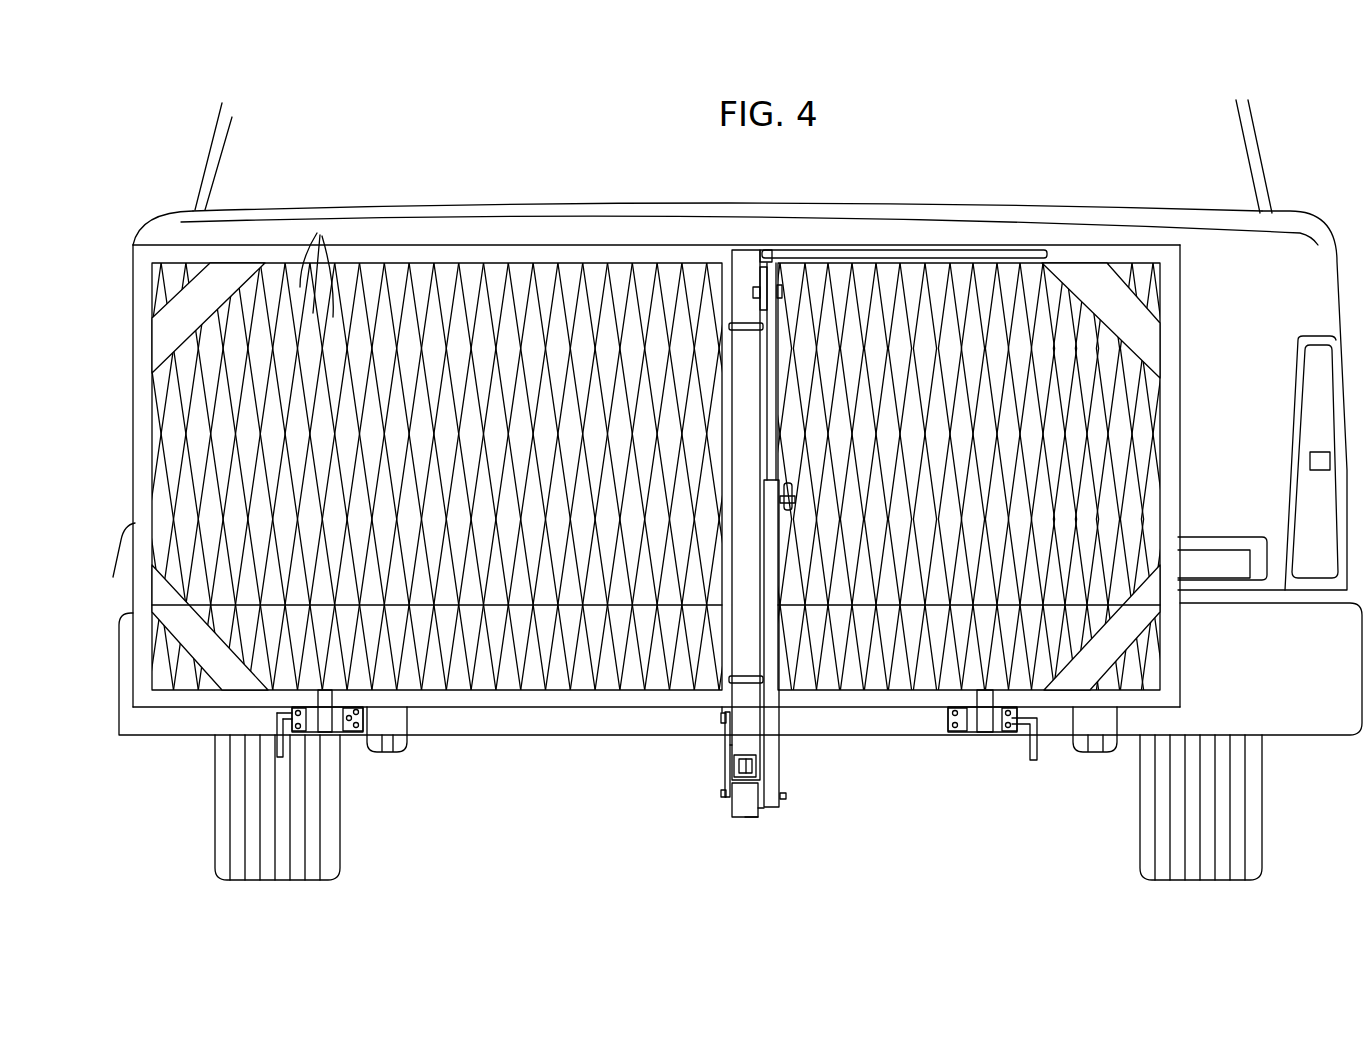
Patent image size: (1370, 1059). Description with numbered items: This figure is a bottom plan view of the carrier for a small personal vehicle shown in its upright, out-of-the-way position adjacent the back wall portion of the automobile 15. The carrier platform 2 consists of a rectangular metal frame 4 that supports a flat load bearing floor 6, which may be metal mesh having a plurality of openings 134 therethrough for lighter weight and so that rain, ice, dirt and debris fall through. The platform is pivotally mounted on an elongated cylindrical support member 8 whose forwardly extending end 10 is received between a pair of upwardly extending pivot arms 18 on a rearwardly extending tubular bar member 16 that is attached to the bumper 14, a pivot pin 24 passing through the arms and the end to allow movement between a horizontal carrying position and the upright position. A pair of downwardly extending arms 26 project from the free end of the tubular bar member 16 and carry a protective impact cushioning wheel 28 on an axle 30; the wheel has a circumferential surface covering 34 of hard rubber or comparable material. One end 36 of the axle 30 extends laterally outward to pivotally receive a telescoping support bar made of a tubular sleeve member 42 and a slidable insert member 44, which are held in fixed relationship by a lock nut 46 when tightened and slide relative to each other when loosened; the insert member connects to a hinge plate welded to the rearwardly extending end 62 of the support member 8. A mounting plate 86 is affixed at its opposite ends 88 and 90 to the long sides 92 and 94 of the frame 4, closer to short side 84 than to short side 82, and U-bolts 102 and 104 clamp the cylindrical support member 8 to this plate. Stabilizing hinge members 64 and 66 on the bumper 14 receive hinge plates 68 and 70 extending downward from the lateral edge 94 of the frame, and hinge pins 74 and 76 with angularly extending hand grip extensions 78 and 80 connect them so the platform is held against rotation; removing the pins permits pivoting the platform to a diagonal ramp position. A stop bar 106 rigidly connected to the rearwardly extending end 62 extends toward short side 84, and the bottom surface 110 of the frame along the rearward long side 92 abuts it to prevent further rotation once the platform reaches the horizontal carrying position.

The carrier platform 2 is at (503, 245).
The rectangular metal frame 4 is at (113, 557).
The flat load bearing floor 6 is at (190, 388).
The elongated cylindrical support member 8 is at (742, 510).
The forwardly extending end 10 is at (733, 745).
The bumper 14 is at (870, 720).
The automobile 15 is at (185, 238).
The tubular bar member 16 is at (748, 765).
The pivot arms 18 is at (730, 765).
The pivot pin 24 is at (727, 730).
The downwardly extending arms 26 is at (762, 810).
The protective impact cushioning wheel 28 is at (745, 818).
The axle 30 is at (722, 795).
The circumferential surface covering 34 is at (750, 815).
The one end of the axle 36 is at (786, 796).
The tubular sleeve member 42 is at (778, 610).
The slidable insert member 44 is at (780, 350).
The lock nut 46 is at (790, 497).
The rearwardly extending end 62 is at (752, 262).
The stabilizing hinge member 64 is at (345, 727).
The stabilizing hinge member 66 is at (1000, 727).
The hinge plate 68 is at (325, 728).
The hinge plate 70 is at (985, 727).
The hinge pin 74 is at (280, 715).
The hinge pin 76 is at (962, 728).
The hand grip extension 78 is at (275, 748).
The hand grip extension 80 is at (1040, 752).
The short side 82 is at (130, 450).
The short side 84 is at (1182, 413).
The mounting plate 86 is at (723, 285).
The end of mounting plate 88 is at (727, 300).
The end of mounting plate 90 is at (720, 710).
The rearward long side 92 is at (378, 250).
The long side 94 is at (600, 710).
The U-bolt 102 is at (730, 327).
The U-bolt 104 is at (730, 680).
The stop bar 106 is at (855, 252).
The bottom surface 110 is at (1075, 255).
The openings 134 is at (302, 269).